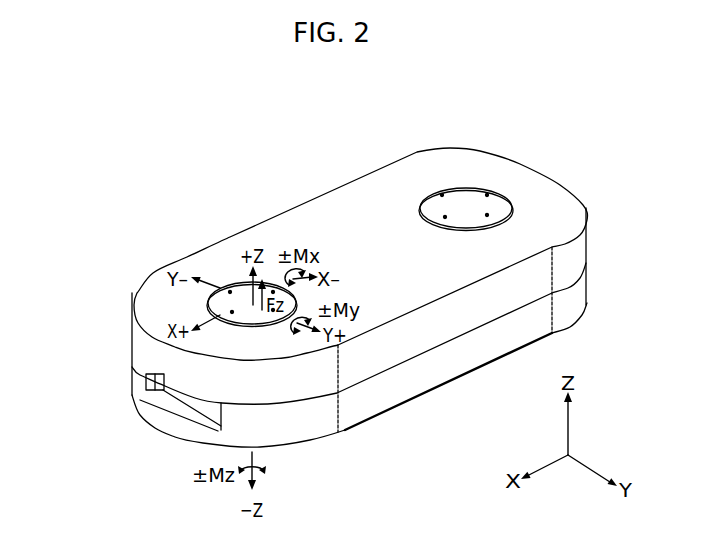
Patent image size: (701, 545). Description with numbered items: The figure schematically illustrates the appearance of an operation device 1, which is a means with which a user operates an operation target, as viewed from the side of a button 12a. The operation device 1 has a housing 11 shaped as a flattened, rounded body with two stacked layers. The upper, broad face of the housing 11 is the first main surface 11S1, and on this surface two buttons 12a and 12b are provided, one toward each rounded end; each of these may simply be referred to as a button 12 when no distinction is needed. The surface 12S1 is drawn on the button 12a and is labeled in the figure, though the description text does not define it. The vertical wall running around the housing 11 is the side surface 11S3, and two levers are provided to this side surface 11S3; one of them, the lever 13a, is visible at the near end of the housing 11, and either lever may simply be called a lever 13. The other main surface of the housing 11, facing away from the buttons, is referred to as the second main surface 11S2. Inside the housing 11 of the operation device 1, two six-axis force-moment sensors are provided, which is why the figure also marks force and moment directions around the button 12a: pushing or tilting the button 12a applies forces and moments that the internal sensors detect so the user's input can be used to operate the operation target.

The operation device 1 is at (502, 144).
The housing 11 is at (279, 207).
The first main surface 11S1 is at (363, 223).
The second main surface 11S2 is at (433, 389).
The side surface 11S3 is at (132, 338).
The button 12 is at (372, 97).
The button 12a is at (236, 285).
The button 12b is at (455, 195).
The port surface 12S1 is at (212, 290).
The lever 13 is at (148, 390).
The lever 13a is at (155, 382).